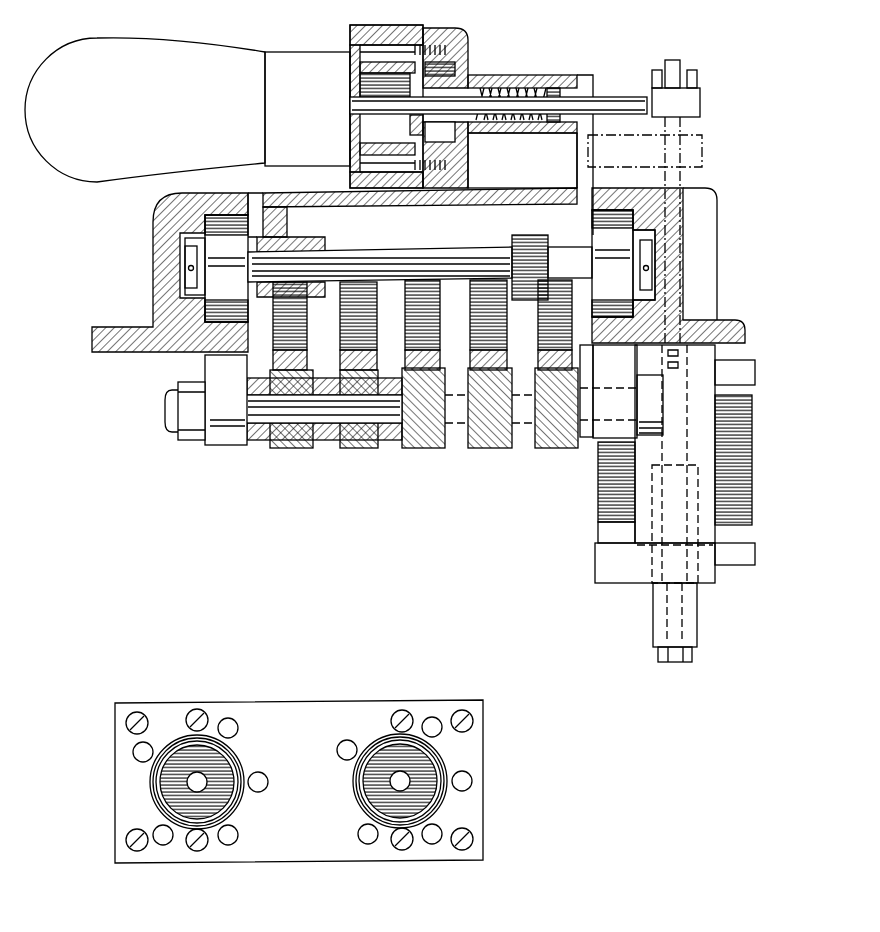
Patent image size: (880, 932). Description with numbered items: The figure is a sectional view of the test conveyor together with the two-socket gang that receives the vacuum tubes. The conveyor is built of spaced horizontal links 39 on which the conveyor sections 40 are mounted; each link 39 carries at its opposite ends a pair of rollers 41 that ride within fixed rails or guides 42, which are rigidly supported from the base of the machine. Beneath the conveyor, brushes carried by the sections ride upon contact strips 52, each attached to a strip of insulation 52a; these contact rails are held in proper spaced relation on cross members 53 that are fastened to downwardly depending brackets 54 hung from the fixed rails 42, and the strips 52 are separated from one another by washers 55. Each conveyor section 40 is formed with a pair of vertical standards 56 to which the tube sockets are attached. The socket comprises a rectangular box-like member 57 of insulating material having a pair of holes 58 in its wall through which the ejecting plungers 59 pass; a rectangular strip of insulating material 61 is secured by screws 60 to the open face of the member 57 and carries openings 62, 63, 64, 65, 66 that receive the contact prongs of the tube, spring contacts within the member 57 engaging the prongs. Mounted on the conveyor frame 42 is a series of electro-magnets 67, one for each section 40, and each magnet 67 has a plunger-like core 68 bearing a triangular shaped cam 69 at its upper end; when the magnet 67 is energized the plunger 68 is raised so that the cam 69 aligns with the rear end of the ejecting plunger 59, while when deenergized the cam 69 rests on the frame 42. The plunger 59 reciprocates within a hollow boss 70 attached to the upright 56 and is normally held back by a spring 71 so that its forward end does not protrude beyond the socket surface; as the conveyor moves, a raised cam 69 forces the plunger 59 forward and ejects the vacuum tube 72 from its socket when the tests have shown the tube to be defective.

In FIG. 4, the horizontal link 39 is at (415, 262).
In FIG. 4, the conveyor section 40 is at (497, 193).
In FIG. 4, the roller 41 is at (207, 258).
In FIG. 4, the fixed rail 42 is at (138, 352).
In FIG. 4, the contact strip 52 is at (422, 325).
In FIG. 4, the strip of insulation 52a is at (292, 447).
In FIG. 4, the cross member 53 is at (262, 447).
In FIG. 4, the bracket 54 is at (226, 445).
In FIG. 4, the washer 55 is at (389, 440).
In FIG. 4, the vertical standard 56 is at (468, 46).
In FIG. 4, the box-like member 57 is at (425, 31).
In FIG. 4, the hole 58 is at (425, 90).
In FIG. 4, the ejecting plunger 59 is at (590, 100).
In FIG. 4, the screw 60 is at (352, 48).
In FIG. 5, the screw 60 is at (470, 732).
In FIG. 4, the strip of insulating material 61 is at (350, 184).
In FIG. 5, the strip of insulating material 61 is at (483, 705).
In FIG. 5, the opening 62 is at (472, 782).
In FIG. 5, the opening 63 is at (432, 845).
In FIG. 5, the opening 64 is at (369, 845).
In FIG. 5, the opening 65 is at (352, 745).
In FIG. 5, the opening 66 is at (437, 721).
In FIG. 4, the electro-magnet 67 is at (742, 456).
In FIG. 4, the plunger-like core 68 is at (697, 614).
In FIG. 4, the triangular shaped cam 69 is at (700, 105).
In FIG. 4, the hollow boss 70 is at (535, 80).
In FIG. 4, the spring 71 is at (522, 160).
In FIG. 4, the vacuum tube 72 is at (193, 42).